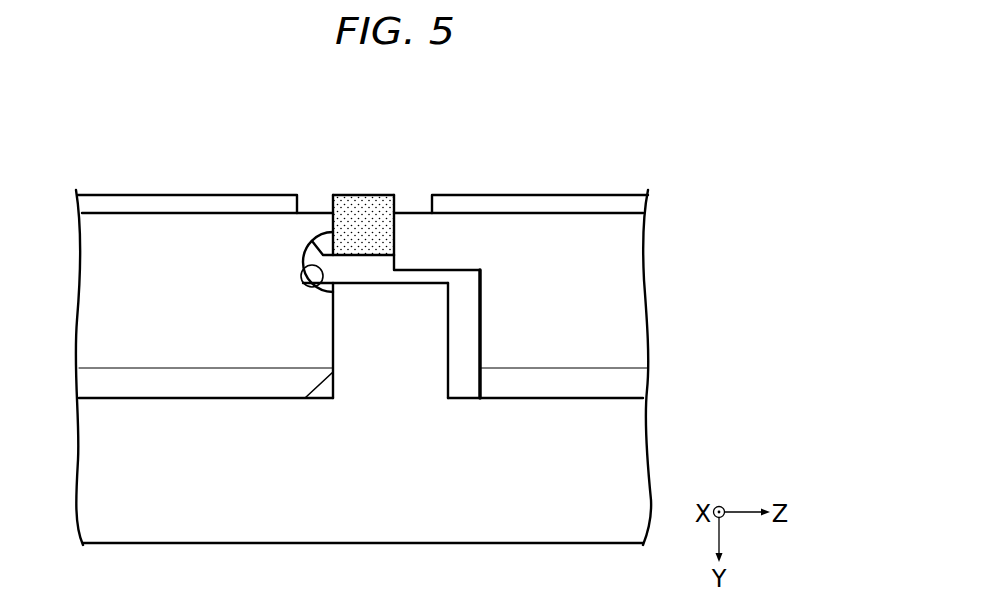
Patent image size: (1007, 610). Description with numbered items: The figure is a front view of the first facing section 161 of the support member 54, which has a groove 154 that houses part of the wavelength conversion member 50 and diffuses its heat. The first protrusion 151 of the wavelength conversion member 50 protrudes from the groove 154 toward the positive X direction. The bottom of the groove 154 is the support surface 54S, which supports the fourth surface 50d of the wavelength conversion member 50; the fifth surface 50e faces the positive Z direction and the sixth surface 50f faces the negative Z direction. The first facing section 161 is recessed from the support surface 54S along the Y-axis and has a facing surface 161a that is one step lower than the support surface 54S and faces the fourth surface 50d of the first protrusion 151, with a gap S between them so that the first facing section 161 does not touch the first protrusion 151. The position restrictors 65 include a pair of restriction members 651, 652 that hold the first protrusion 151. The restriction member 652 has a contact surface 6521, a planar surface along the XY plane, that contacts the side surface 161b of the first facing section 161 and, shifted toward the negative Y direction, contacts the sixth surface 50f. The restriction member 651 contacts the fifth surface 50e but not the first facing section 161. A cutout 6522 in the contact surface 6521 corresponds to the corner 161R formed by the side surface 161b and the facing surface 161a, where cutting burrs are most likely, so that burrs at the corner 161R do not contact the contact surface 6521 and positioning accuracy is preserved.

The wavelength conversion member 50 is at (375, 323).
The first protrusion 151 is at (389, 158).
The groove 154 is at (352, 164).
The support surface 54S is at (355, 256).
The support member 54 is at (473, 213).
The fourth surface 50d is at (376, 413).
The fifth surface 50e is at (394, 233).
The sixth surface 50f is at (333, 232).
The position restrictors 65 is at (363, 338).
The restriction member 651 is at (459, 243).
The restriction member 652 is at (228, 338).
The contact surface 6521 is at (335, 335).
The cutout 6522 is at (313, 288).
The first facing section 161 is at (352, 372).
The facing surface 161a is at (415, 282).
The side surface 161b is at (332, 352).
The corner 161R is at (306, 261).
The gap S is at (357, 280).